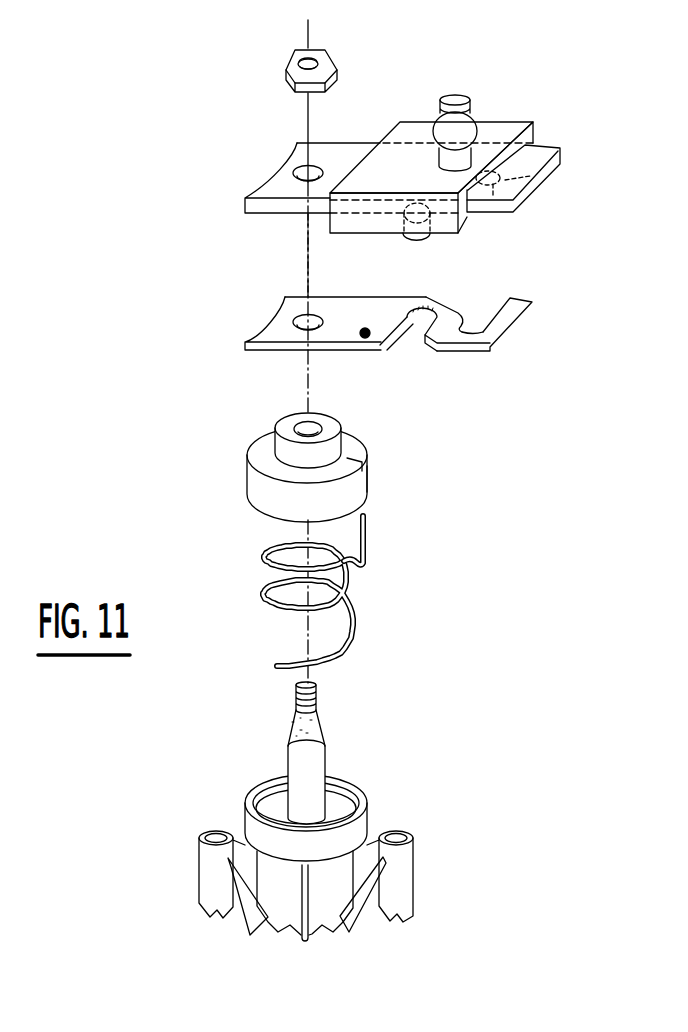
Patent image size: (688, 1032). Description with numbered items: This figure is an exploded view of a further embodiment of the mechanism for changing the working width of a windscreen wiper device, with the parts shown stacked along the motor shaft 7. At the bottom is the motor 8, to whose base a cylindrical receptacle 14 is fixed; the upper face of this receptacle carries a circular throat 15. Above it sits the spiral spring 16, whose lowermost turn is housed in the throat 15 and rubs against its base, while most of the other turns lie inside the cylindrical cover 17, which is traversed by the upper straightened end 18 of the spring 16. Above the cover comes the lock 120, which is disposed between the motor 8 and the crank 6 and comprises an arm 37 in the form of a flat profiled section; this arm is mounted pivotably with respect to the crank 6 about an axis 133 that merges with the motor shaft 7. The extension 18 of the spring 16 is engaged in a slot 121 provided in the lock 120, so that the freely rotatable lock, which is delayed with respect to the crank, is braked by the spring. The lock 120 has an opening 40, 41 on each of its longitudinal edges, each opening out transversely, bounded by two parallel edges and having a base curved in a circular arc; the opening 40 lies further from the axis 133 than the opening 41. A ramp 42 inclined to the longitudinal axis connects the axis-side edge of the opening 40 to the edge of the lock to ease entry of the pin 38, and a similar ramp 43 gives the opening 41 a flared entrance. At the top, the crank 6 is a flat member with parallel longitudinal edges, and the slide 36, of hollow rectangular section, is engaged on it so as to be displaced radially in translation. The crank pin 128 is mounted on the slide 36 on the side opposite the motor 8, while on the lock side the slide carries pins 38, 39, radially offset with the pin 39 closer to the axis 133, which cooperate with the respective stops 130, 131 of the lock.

The crank 6 is at (262, 185).
The crank pin 128 is at (477, 103).
The slide 36 is at (510, 132).
The pin 38 is at (540, 192).
The pin 39 is at (415, 241).
The axis 133 is at (310, 270).
The lock 120 is at (514, 346).
The arm 37 is at (303, 346).
The slot 121 is at (363, 340).
The opening 41 is at (398, 347).
The stop 131 is at (408, 330).
The ramp 42 is at (447, 302).
The stop 130 is at (478, 322).
The opening 40 is at (495, 300).
The ramp 43 is at (432, 352).
The cylindrical cover 17 is at (248, 470).
The spiral spring 16 is at (255, 586).
The upper straightened end of the spring 18 is at (368, 532).
The cylindrical receptacle 14 is at (246, 771).
The circular throat 15 is at (350, 783).
The shaft 7 is at (318, 763).
The motor 8 is at (398, 875).